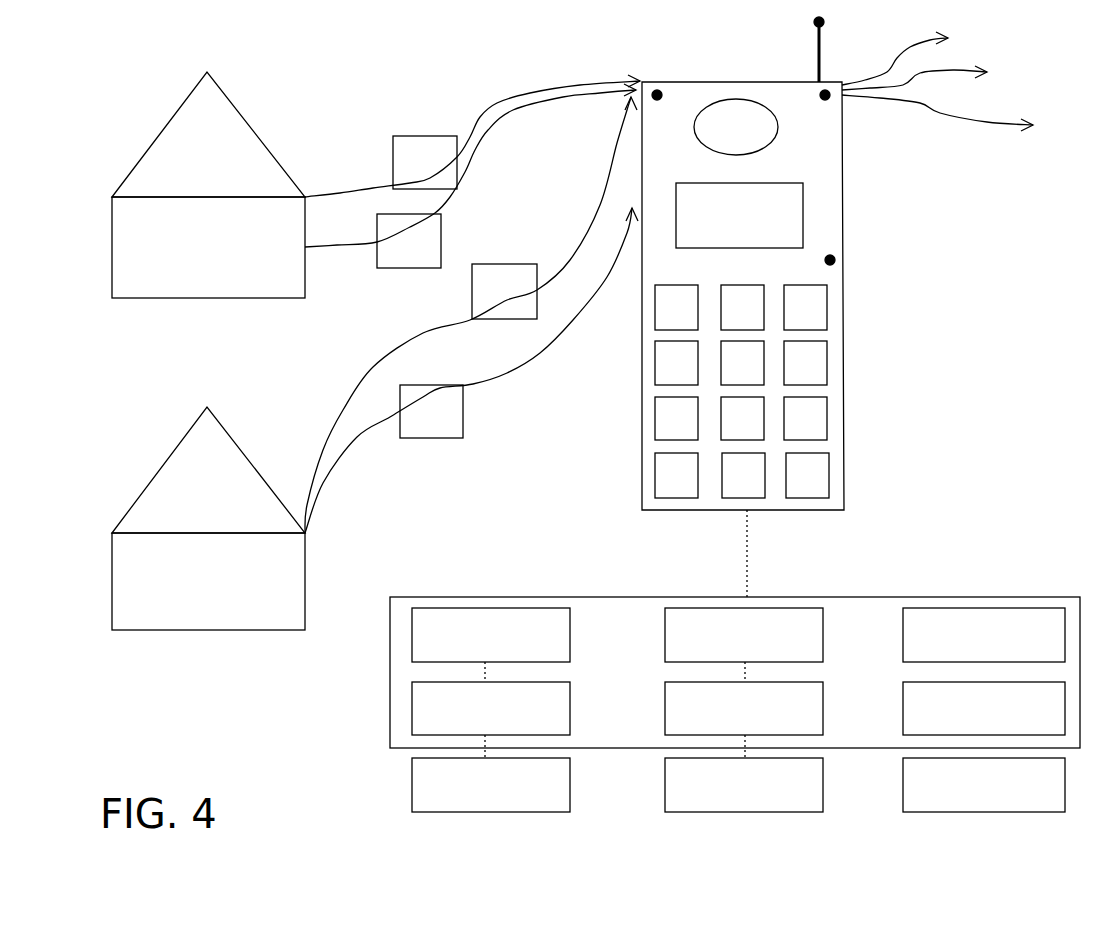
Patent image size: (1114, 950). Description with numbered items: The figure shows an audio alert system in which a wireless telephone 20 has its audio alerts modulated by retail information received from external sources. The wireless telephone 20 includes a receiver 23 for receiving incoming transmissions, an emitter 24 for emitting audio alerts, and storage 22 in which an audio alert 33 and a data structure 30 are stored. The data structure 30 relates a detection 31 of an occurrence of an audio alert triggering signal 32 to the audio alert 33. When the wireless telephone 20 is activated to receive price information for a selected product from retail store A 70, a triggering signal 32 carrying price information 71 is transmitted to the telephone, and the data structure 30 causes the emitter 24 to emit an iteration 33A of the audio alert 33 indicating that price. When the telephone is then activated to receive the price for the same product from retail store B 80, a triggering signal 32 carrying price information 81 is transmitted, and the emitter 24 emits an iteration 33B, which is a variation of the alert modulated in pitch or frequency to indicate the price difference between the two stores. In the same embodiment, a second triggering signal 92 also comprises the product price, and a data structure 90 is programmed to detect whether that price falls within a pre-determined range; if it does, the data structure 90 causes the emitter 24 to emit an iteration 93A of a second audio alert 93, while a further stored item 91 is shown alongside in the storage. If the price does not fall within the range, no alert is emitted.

The wireless telephone 20 is at (642, 432).
The storage 22 is at (390, 711).
The receiver 23 is at (636, 100).
The emitter 24 is at (832, 100).
The data structure 30 is at (491, 708).
The detection 31 is at (491, 785).
The audio alert triggering signal 32 is at (375, 188).
The audio alert 33 is at (491, 635).
The iteration of audio alert 33A is at (911, 58).
The iteration of audio alert 33B is at (931, 77).
The retail store A 70 is at (145, 152).
The price information 71 is at (417, 202).
The retail store B 80 is at (157, 470).
The price information 81 is at (468, 351).
The data structure 90 is at (744, 708).
The stored data 91 is at (744, 785).
The audio alert triggering signal 92 is at (335, 246).
The audio alert 93 is at (744, 635).
The iteration of audio alert 93A is at (954, 114).